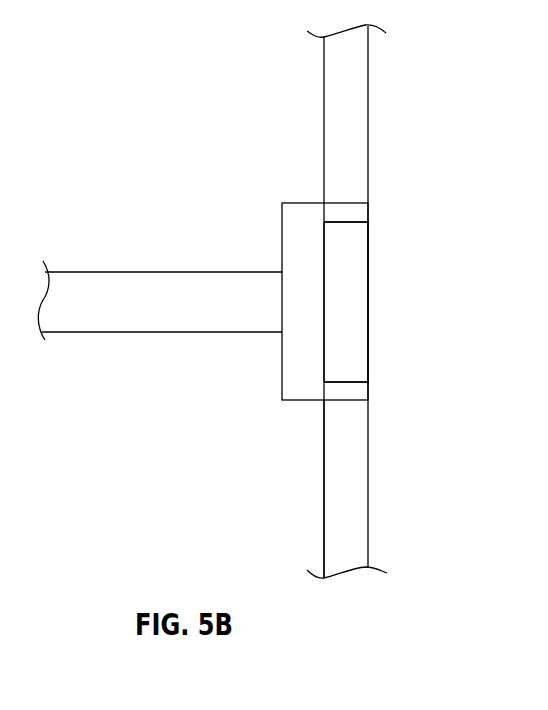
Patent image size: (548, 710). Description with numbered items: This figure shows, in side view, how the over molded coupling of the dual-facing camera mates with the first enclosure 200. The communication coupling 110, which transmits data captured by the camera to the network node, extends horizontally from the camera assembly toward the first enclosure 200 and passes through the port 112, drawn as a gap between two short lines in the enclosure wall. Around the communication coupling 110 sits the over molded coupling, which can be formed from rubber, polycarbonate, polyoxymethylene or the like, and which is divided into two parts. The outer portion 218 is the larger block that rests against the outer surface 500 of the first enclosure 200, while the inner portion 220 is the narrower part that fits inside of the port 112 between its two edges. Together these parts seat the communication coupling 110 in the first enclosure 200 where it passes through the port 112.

The communication coupling 110 is at (160, 320).
The port 112 is at (356, 213).
The first enclosure 200 is at (356, 110).
The outer portion 218 is at (292, 243).
The inner portion 220 is at (360, 298).
The outer surface 500 is at (322, 488).